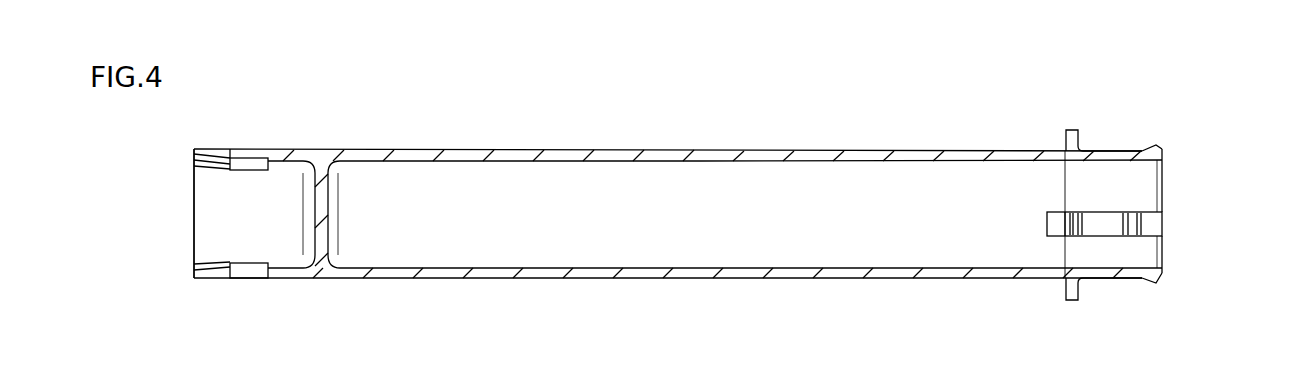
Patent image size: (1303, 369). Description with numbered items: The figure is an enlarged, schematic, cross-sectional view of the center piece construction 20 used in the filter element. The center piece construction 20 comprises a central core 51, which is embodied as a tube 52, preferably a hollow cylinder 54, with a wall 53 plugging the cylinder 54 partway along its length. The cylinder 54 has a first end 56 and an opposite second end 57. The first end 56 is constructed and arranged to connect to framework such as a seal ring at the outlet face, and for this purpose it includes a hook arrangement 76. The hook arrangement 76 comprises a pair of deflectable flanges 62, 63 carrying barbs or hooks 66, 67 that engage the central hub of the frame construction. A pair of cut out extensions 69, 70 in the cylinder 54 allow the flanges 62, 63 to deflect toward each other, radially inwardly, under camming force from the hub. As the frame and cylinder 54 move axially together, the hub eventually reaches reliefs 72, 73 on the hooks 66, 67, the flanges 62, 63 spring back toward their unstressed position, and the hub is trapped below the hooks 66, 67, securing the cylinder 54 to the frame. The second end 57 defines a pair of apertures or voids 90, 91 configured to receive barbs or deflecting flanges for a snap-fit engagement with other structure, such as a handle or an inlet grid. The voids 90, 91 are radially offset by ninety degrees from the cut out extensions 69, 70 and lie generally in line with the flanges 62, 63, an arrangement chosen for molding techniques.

The center piece construction 20 is at (645, 128).
The central core 51 is at (760, 151).
The tube 52 is at (512, 150).
The wall 53 is at (329, 202).
The hollow cylinder 54 is at (827, 279).
The first end 56 is at (1167, 170).
The second end 57 is at (193, 195).
The deflectable flange 62 is at (1100, 150).
The deflectable flange 63 is at (1093, 282).
The hook 66 is at (1152, 150).
The hook 67 is at (1153, 283).
The cut out extension 69 is at (1145, 213).
The cut out extension 70 is at (1132, 224).
The relief 72 is at (1142, 148).
The relief 73 is at (1142, 283).
The hook arrangement 76 is at (1188, 254).
The void 90 is at (265, 157).
The void 91 is at (232, 275).